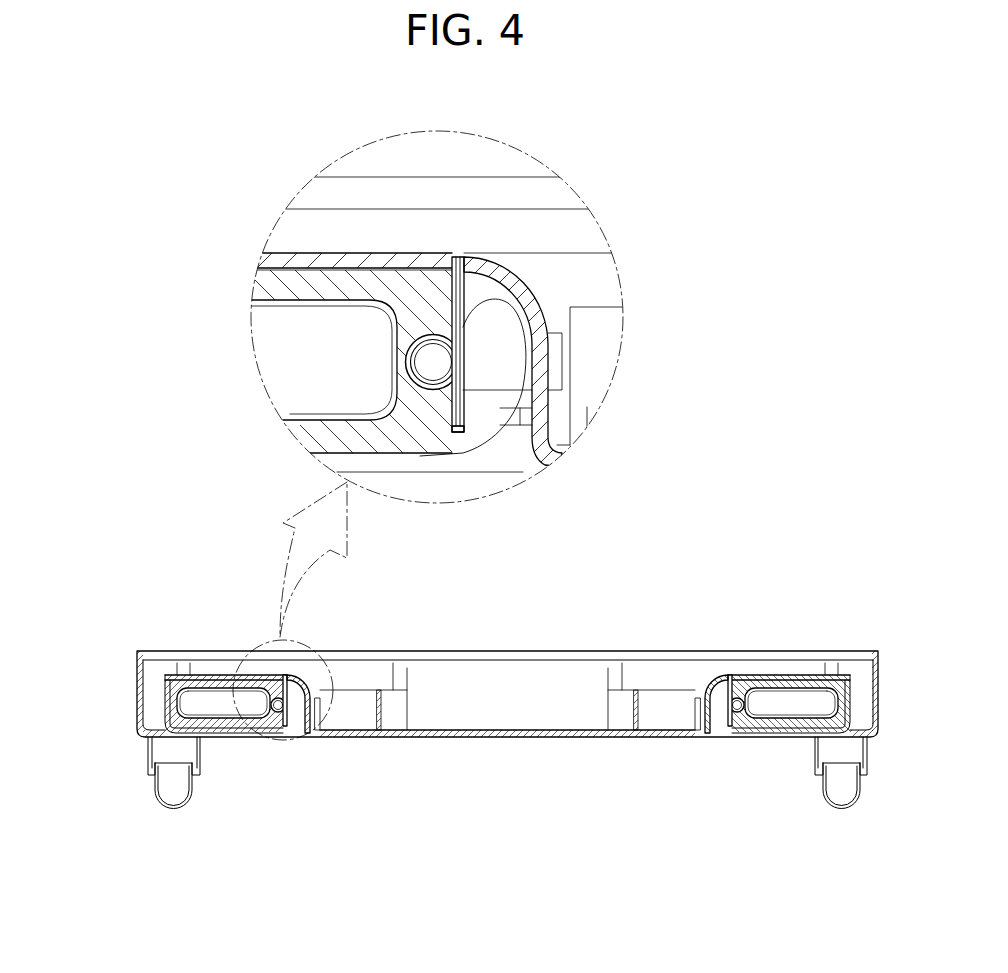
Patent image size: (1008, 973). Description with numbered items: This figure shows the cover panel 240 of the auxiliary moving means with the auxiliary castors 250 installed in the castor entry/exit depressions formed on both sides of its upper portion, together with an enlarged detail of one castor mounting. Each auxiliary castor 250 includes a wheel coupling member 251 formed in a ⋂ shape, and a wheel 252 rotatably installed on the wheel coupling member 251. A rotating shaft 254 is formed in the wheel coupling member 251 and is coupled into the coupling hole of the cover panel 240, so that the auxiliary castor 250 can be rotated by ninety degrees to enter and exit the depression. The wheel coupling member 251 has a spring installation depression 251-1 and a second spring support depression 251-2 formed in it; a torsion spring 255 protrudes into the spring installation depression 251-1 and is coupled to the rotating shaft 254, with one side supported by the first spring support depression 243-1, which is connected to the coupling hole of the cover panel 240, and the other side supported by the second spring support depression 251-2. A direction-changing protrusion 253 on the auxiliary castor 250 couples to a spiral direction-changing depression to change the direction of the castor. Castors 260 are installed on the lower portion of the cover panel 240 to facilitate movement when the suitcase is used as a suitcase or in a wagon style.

The cover panel 240 is at (506, 748).
The first spring support depression 243-1 is at (453, 255).
The auxiliary castor 250 is at (318, 267).
The wheel coupling member 251 is at (258, 281).
The spring installation depression 251-1 is at (490, 357).
The second spring support depression 251-2 is at (458, 433).
The wheel 252 is at (178, 703).
The direction-changing protrusion 253 is at (558, 358).
The rotating shaft 254 is at (430, 362).
The torsion spring 255 is at (495, 298).
The castor 260 is at (146, 757).